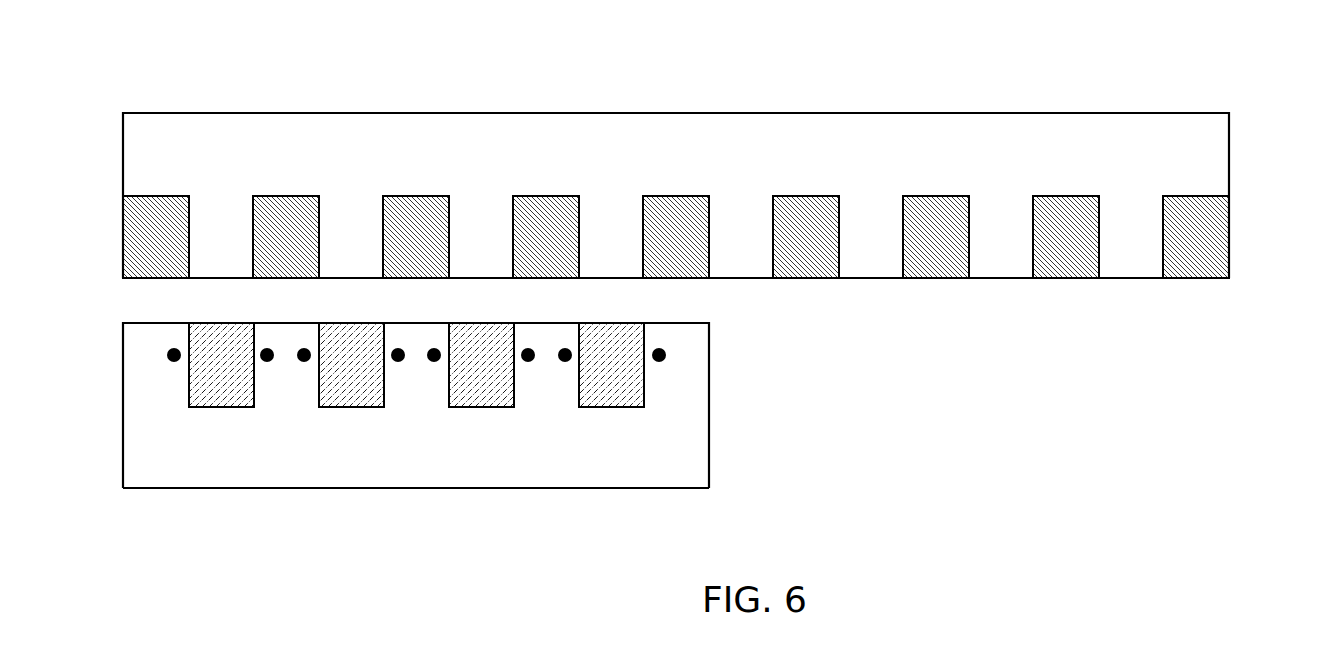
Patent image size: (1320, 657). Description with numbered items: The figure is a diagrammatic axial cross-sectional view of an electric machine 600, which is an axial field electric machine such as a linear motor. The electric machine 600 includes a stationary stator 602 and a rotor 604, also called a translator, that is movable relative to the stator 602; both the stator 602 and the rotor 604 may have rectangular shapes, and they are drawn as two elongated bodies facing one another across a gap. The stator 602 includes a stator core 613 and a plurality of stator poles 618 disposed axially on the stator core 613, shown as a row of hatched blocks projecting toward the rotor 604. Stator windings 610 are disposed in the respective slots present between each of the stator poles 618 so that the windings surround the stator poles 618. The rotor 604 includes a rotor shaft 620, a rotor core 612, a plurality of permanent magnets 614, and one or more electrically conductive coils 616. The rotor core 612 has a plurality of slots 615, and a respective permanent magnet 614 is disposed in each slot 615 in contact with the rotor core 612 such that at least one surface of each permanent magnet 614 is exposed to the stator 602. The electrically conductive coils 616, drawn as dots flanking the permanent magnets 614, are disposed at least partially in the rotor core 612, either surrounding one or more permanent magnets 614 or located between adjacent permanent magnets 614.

The electric machine 600 is at (1150, 62).
The stator 602 is at (633, 113).
The rotor 604 is at (678, 490).
The stator windings 610 is at (289, 212).
The rotor core 612 is at (233, 438).
The stator core 613 is at (733, 172).
The permanent magnets 614 is at (482, 387).
The slots 615 is at (187, 397).
The electrically conductive coils 616 is at (304, 363).
The stator poles 618 is at (757, 272).
The rotor shaft 620 is at (689, 434).